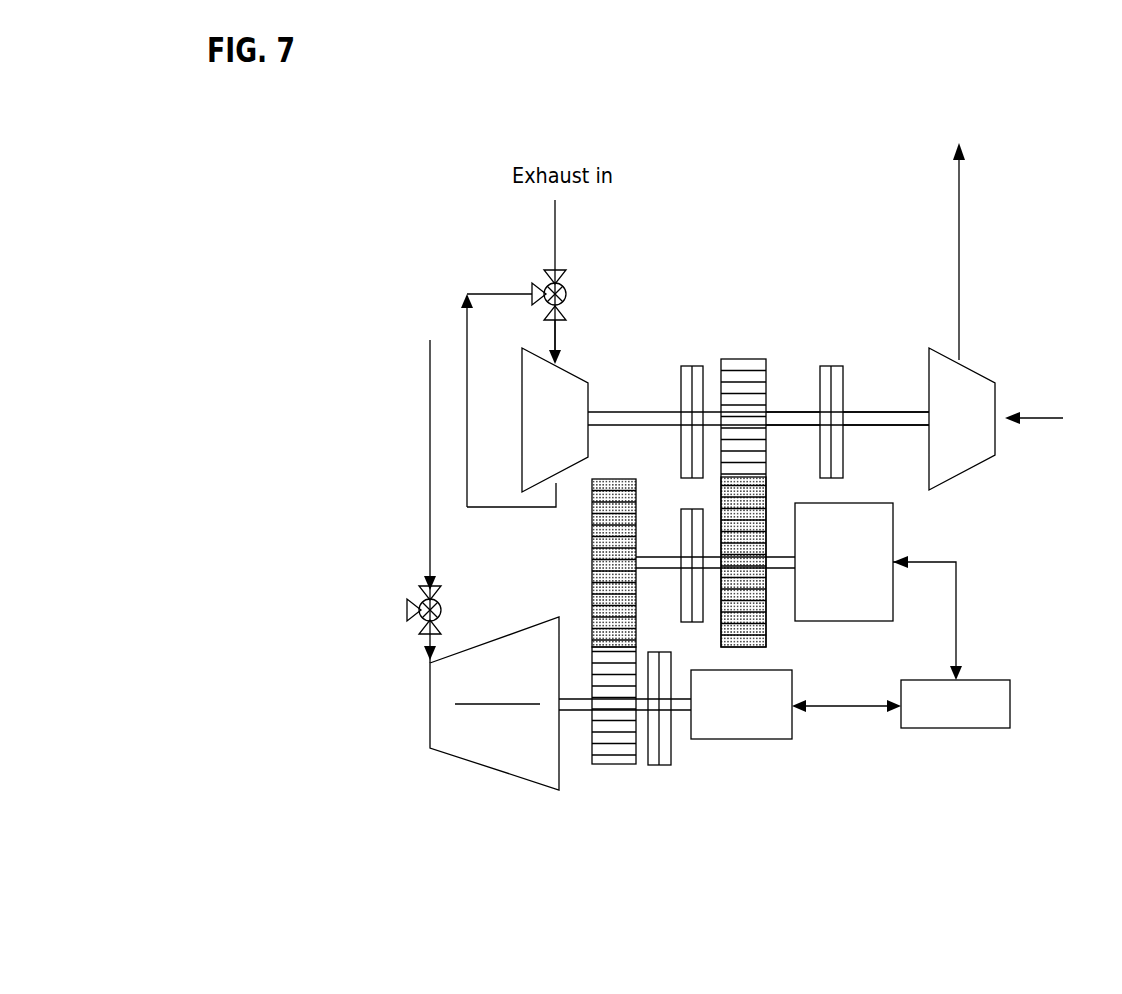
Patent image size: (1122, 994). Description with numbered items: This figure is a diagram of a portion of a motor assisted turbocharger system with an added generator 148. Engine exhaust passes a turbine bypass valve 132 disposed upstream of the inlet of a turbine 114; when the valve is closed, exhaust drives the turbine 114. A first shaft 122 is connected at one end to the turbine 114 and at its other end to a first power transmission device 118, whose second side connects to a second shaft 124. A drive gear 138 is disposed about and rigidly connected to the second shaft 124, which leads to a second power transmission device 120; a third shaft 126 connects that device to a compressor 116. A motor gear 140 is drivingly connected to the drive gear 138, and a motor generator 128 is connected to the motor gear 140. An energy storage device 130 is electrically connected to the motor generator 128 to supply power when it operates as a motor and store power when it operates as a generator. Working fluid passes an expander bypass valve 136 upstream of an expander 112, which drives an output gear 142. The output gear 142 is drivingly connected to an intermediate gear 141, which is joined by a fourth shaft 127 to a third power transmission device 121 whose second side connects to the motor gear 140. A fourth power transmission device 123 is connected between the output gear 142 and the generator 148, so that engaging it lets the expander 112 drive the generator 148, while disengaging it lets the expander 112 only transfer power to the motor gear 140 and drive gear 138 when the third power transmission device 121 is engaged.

The expander 112 is at (518, 783).
The turbine 114 is at (522, 397).
The compressor 116 is at (995, 383).
The first power transmission device 118 is at (690, 366).
The second power transmission device 120 is at (838, 366).
The third power transmission device 121 is at (713, 643).
The first shaft 122 is at (628, 412).
The fourth power transmission device 123 is at (650, 765).
The second shaft 124 is at (800, 412).
The third shaft 126 is at (900, 412).
The fourth shaft 127 is at (675, 553).
The motor generator 128 is at (893, 528).
The energy storage device 130 is at (1010, 702).
The turbine bypass valve 132 is at (543, 270).
The expander bypass valve 136 is at (441, 616).
The drive gear 138 is at (748, 358).
The motor gear 140 is at (766, 623).
The intermediate gear 141 is at (592, 515).
The output gear 142 is at (608, 765).
The generator 148 is at (778, 740).